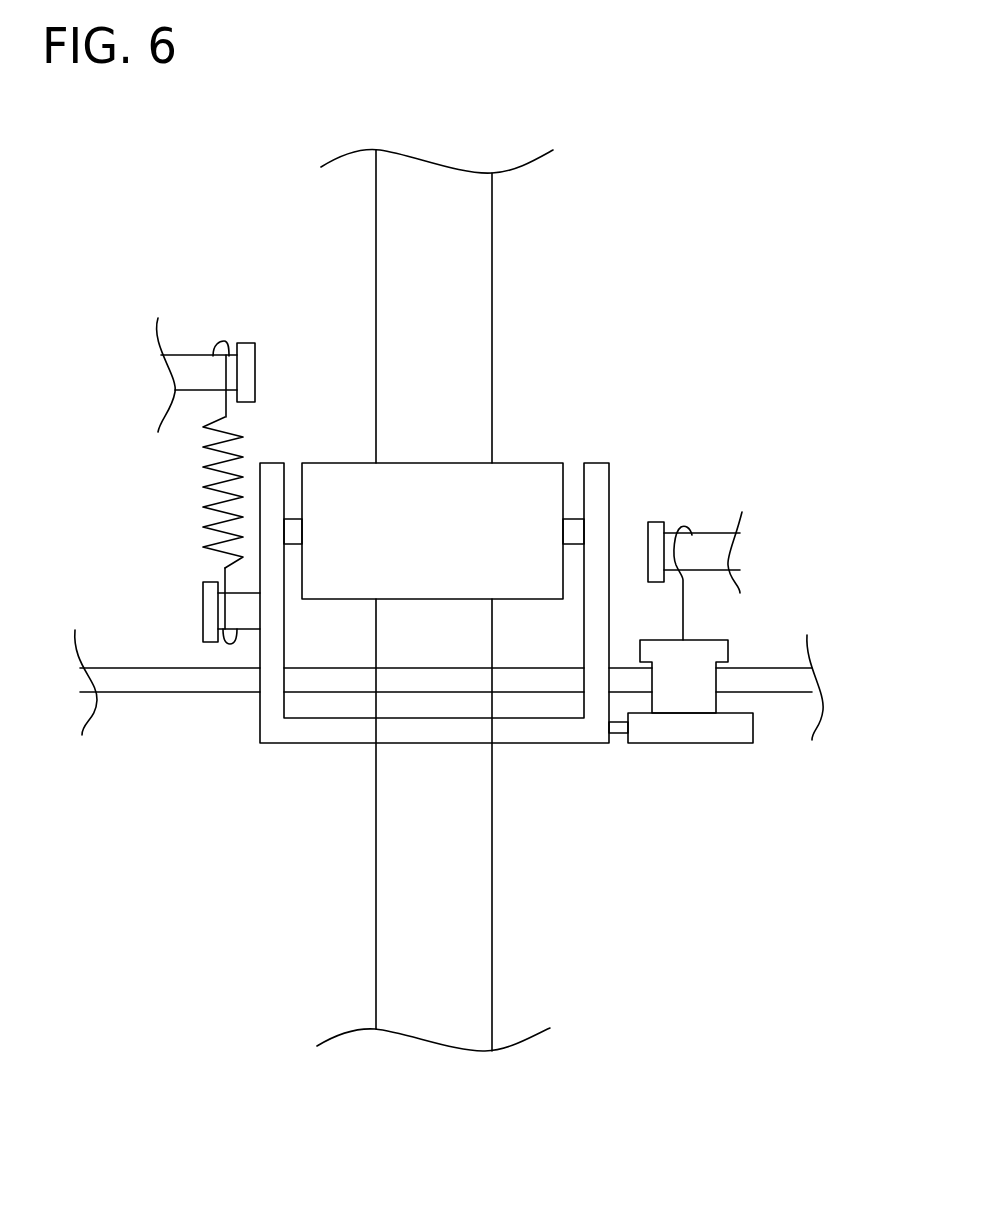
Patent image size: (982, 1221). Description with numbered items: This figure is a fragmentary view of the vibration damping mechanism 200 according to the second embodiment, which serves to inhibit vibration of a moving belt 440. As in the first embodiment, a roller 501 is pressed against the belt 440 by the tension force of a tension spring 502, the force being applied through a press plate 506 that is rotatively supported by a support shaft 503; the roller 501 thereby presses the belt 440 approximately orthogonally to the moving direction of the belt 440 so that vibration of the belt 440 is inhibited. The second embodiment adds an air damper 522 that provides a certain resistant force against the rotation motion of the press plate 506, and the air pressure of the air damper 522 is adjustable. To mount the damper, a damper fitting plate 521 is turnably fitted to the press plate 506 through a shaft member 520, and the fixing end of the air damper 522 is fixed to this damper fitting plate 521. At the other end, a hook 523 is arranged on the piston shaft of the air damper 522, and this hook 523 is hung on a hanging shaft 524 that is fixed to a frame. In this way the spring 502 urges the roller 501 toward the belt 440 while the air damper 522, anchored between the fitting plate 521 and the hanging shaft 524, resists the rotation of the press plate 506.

The vibration damping mechanism 200 is at (250, 803).
The belt 440 is at (493, 270).
The roller 501 is at (530, 462).
The tension spring 502 is at (210, 490).
The support shaft 503 is at (163, 682).
The press plate 506 is at (605, 478).
The shaft member 520 is at (619, 738).
The damper fitting plate 521 is at (690, 745).
The air damper 522 is at (707, 703).
The hook 523 is at (685, 608).
The hanging shaft 524 is at (722, 526).